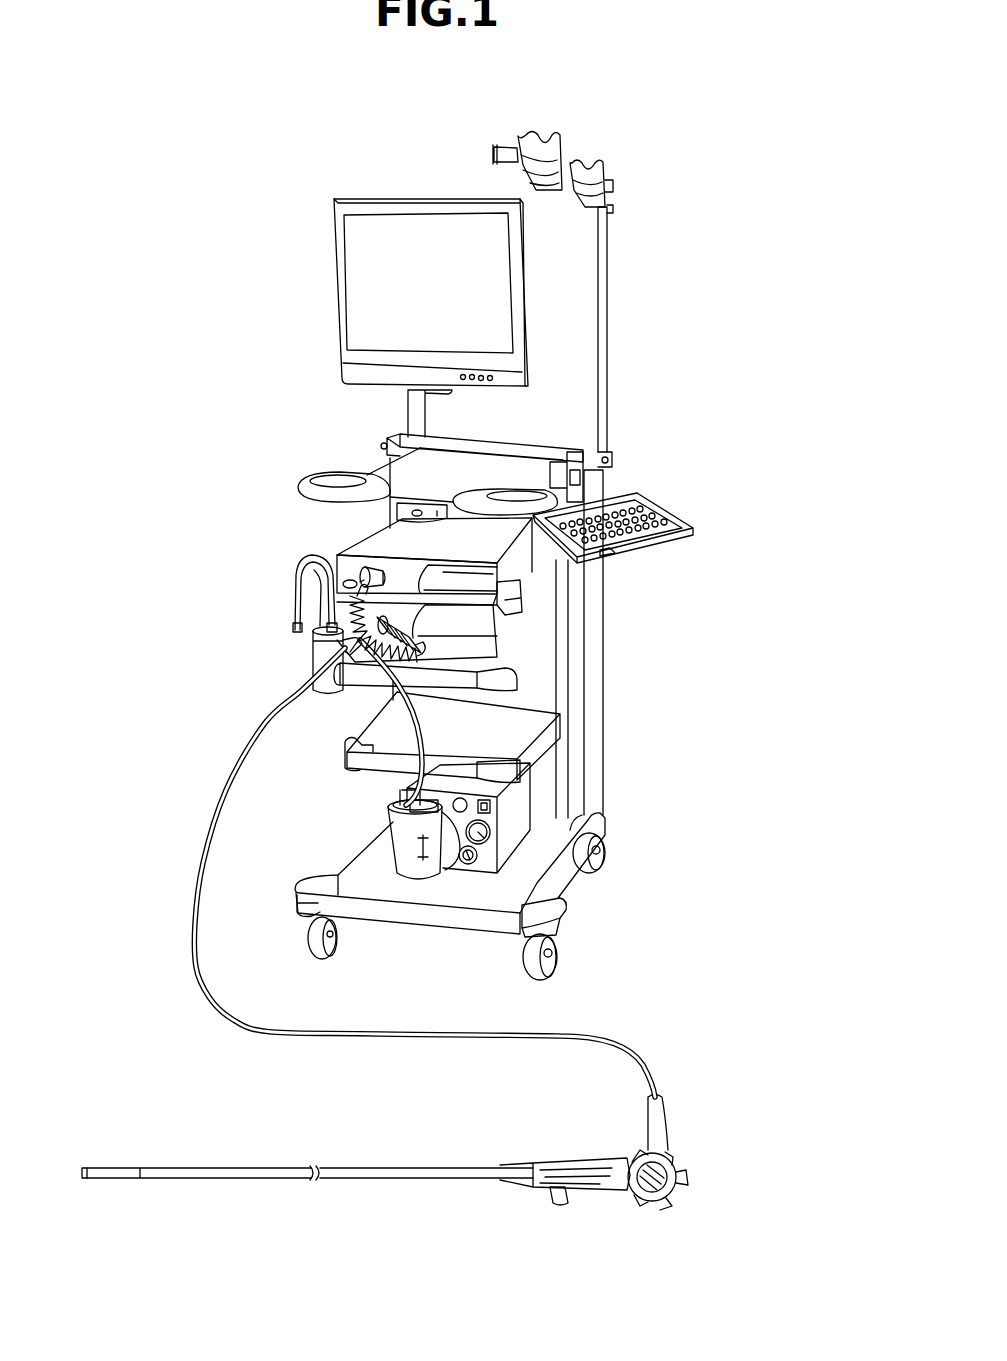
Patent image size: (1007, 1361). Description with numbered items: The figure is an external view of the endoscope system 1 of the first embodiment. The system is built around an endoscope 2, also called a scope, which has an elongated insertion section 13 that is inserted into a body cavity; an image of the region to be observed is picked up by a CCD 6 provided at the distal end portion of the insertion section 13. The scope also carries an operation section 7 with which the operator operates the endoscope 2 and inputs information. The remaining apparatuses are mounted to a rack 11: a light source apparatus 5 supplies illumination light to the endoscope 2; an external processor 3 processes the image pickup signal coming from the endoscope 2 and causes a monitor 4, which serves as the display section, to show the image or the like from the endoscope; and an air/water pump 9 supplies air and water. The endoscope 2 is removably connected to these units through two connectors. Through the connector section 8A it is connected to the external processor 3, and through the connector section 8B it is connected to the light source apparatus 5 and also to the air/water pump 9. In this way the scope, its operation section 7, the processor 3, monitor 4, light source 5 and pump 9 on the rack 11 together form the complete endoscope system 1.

The endoscope system 1 is at (713, 397).
The endoscope 2 is at (404, 1184).
The external processor 3 is at (338, 548).
The monitor 4 is at (341, 364).
The light source apparatus 5 is at (540, 600).
The CCD 6 is at (83, 1181).
The operation section 7 is at (660, 502).
The connector section 8A is at (298, 578).
The connector section 8B is at (314, 652).
The air/water pump 9 is at (528, 810).
The rack 11 is at (438, 937).
The insertion section 13 is at (279, 1167).